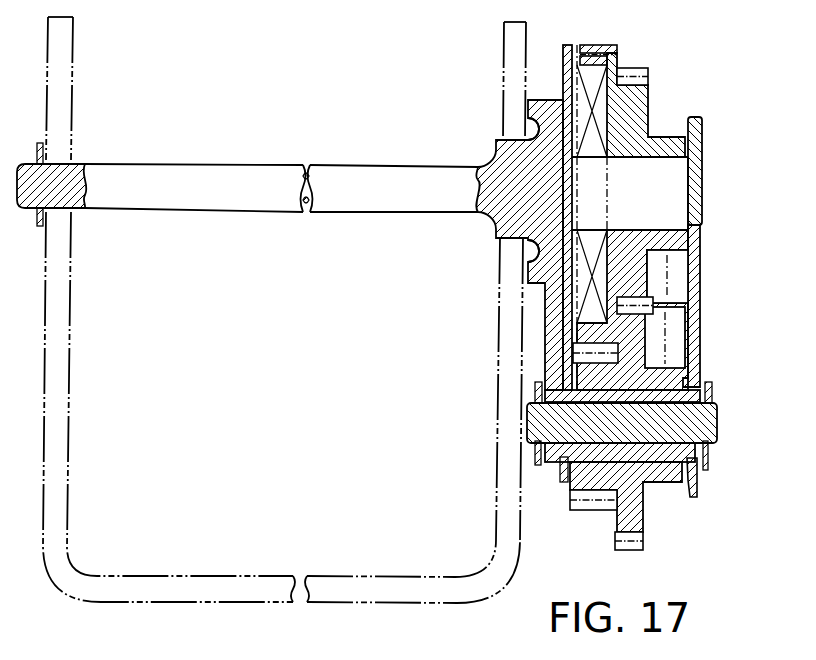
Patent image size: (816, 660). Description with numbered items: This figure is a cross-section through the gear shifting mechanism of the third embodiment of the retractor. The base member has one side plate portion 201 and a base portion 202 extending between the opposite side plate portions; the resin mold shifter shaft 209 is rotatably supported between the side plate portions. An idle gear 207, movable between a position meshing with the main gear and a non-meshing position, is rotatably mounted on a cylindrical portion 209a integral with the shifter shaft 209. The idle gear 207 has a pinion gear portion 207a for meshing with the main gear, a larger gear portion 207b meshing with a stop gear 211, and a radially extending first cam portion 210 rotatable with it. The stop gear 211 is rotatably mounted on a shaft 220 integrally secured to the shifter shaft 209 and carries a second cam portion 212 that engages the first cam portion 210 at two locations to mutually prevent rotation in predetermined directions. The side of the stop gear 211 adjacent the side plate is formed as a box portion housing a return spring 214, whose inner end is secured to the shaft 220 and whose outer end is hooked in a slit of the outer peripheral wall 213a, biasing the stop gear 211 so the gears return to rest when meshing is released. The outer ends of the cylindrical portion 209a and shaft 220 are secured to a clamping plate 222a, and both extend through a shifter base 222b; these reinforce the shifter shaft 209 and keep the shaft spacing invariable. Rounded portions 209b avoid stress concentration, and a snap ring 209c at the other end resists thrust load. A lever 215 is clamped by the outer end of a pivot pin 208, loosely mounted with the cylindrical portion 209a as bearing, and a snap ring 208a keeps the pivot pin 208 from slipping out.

The side plate portion 201 is at (521, 537).
The base portion 202 is at (437, 604).
The idle gear 207 is at (647, 506).
The pinion gear portion 207a is at (578, 497).
The larger gear portion 207b is at (633, 547).
The pivot pin 208 is at (540, 418).
The snap ring 208a is at (535, 455).
The shifter shaft 209 is at (404, 170).
The cylindrical portion 209a is at (668, 394).
The rounded portions 209b is at (536, 129).
The snap ring 209c is at (45, 216).
The first cam portion 210 is at (673, 333).
The stop gear 211 is at (641, 92).
The second cam portion 212 is at (674, 262).
The outer peripheral wall 213a is at (588, 47).
The return spring 214 is at (608, 69).
The lever 215 is at (702, 463).
The shaft 220 is at (681, 165).
The clamping plate 222a is at (697, 297).
The shifter base 222b is at (563, 55).